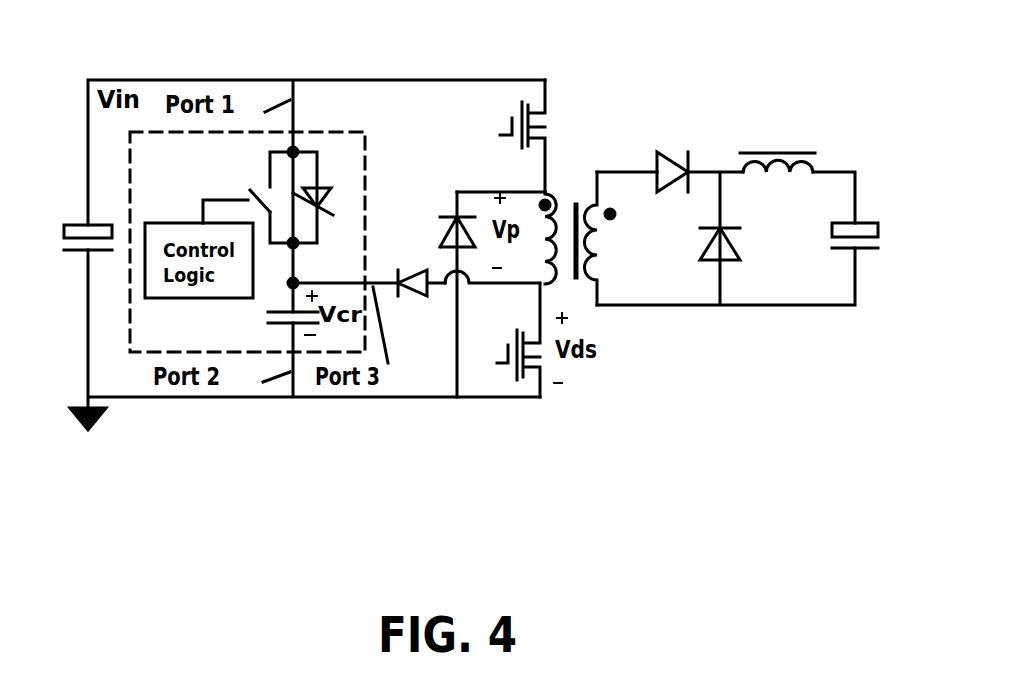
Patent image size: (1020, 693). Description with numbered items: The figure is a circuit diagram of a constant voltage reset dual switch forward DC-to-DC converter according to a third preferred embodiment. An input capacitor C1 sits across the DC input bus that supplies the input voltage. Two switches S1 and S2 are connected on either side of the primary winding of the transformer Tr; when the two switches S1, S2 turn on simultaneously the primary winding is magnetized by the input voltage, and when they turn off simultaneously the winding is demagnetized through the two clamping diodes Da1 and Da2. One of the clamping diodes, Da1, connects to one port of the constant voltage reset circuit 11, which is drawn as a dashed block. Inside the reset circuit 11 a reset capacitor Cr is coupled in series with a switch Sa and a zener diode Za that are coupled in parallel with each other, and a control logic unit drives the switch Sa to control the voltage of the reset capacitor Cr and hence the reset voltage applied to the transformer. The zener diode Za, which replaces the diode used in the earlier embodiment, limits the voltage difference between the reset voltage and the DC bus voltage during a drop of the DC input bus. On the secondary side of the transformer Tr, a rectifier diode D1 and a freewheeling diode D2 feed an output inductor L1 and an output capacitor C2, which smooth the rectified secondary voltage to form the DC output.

The constant voltage reset circuit 11 is at (335, 132).
The input capacitor C1 is at (73, 258).
The switch Sa is at (236, 189).
The zener diode Za is at (325, 189).
The reset capacitor Cr is at (264, 325).
The clamping diode Da1 is at (369, 305).
The clamping diode Da2 is at (430, 285).
The switch S1 is at (495, 136).
The switch S2 is at (496, 340).
The transformer Tr is at (577, 225).
The output rectifier diode D1 is at (665, 151).
The freewheeling diode D2 is at (691, 243).
The output inductor L1 is at (777, 146).
The output capacitor C2 is at (857, 255).